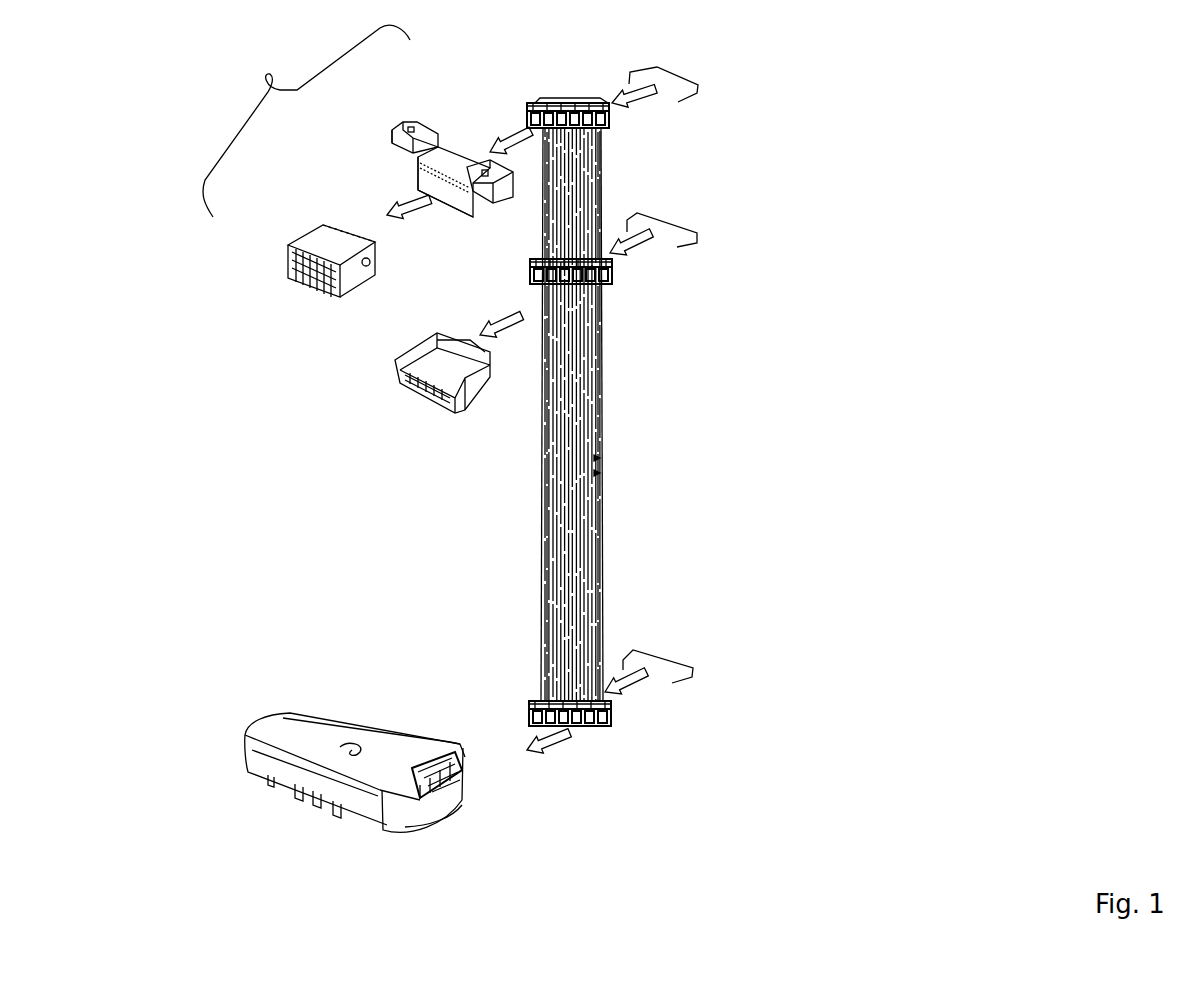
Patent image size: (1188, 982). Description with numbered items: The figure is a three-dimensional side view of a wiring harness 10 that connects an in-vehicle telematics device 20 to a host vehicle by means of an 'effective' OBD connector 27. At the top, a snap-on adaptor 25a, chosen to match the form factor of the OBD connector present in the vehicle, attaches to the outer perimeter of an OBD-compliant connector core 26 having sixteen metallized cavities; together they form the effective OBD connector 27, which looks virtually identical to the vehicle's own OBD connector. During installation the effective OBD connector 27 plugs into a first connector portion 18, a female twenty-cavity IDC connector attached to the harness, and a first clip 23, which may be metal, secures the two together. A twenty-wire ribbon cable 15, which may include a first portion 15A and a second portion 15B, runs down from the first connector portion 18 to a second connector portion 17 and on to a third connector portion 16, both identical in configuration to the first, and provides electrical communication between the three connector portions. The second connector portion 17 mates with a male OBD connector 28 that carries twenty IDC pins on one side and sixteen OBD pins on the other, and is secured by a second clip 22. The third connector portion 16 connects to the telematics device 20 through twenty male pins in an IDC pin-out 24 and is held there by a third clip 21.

The wiring harness 10 is at (828, 212).
The ribbon cable 15 is at (595, 625).
The first portion of ribbon cable 15A is at (600, 180).
The second portion of ribbon cable 15B is at (595, 453).
The third connector portion 16 is at (598, 726).
The second connector portion 17 is at (604, 276).
The first connector portion 18 is at (526, 106).
The telematics device 20 is at (382, 792).
The third clip 21 is at (672, 683).
The second clip 22 is at (682, 243).
The first clip 23 is at (665, 72).
The IDC pin-out 24 is at (463, 773).
The snap-on adaptor 25a is at (400, 120).
The OBD-compliant connector core 26 is at (305, 243).
The effective OBD connector 27 is at (306, 121).
The OBD connector 28 is at (400, 387).